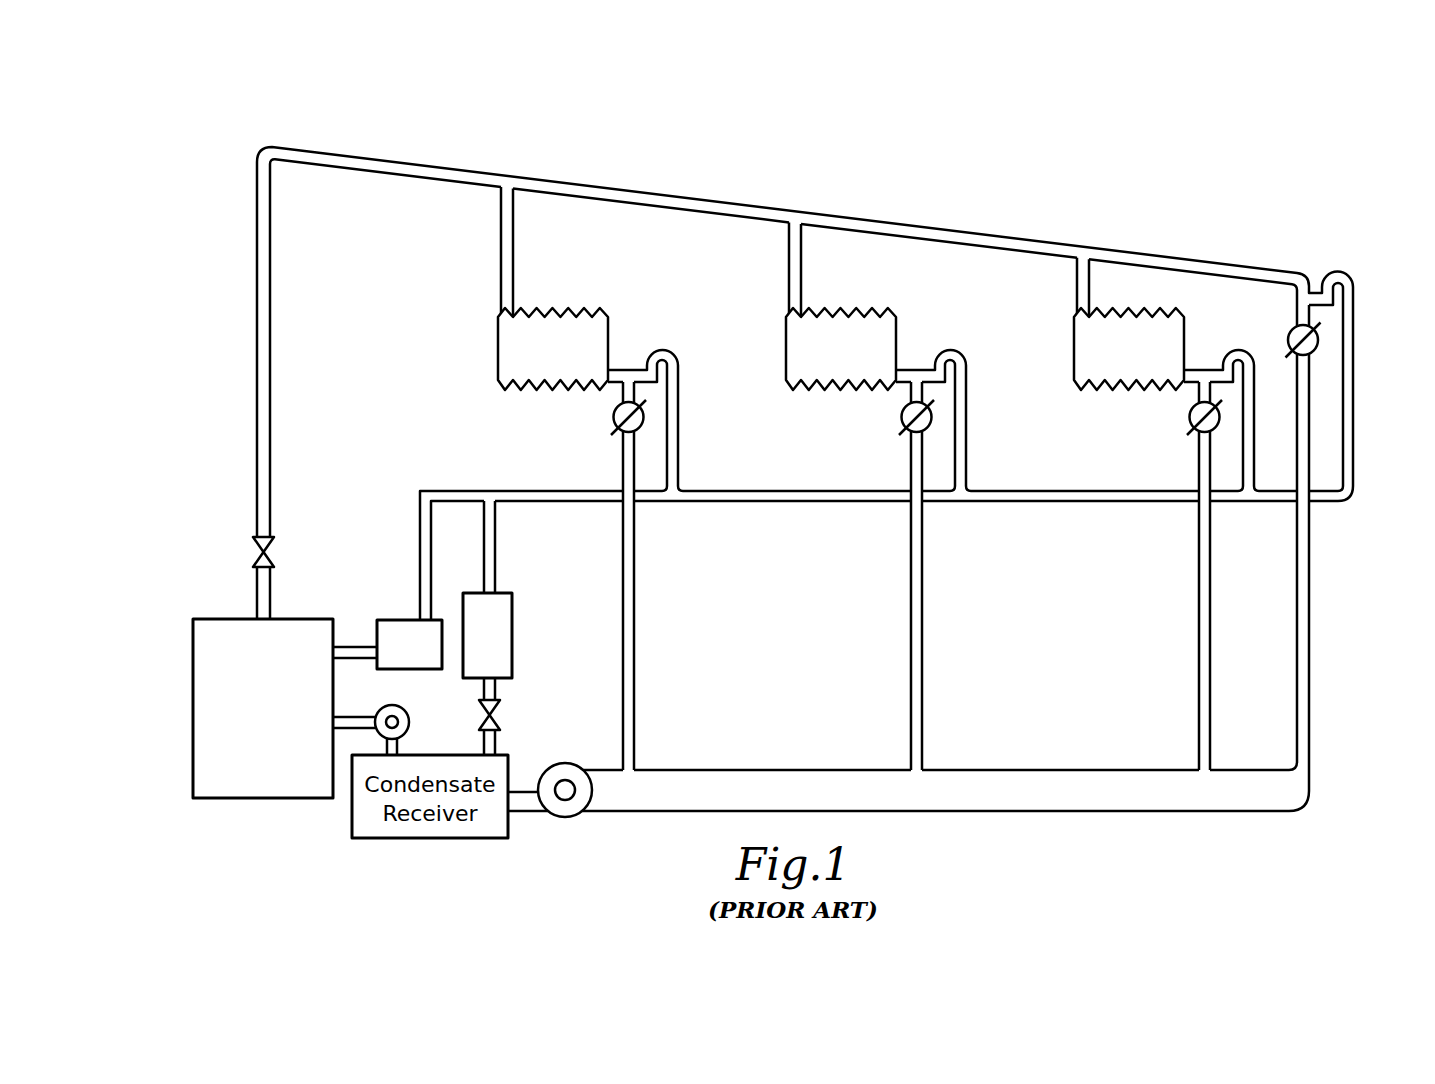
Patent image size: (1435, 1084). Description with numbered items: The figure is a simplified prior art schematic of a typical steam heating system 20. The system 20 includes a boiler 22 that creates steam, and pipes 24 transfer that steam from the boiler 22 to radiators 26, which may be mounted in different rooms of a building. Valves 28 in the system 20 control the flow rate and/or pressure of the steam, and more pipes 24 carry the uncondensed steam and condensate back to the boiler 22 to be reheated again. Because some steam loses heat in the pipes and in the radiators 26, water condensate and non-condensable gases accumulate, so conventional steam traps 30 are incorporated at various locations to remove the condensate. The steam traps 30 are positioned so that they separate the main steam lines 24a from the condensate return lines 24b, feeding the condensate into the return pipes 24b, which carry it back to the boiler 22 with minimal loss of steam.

The steam heating system 20 is at (1190, 168).
The boiler 22 is at (192, 698).
The pipes 24 is at (676, 190).
The main steam lines 24a is at (974, 232).
The condensate return lines 24b is at (1017, 768).
The radiators 26 is at (563, 306).
The valves 28 is at (252, 552).
The steam traps 30 is at (612, 415).